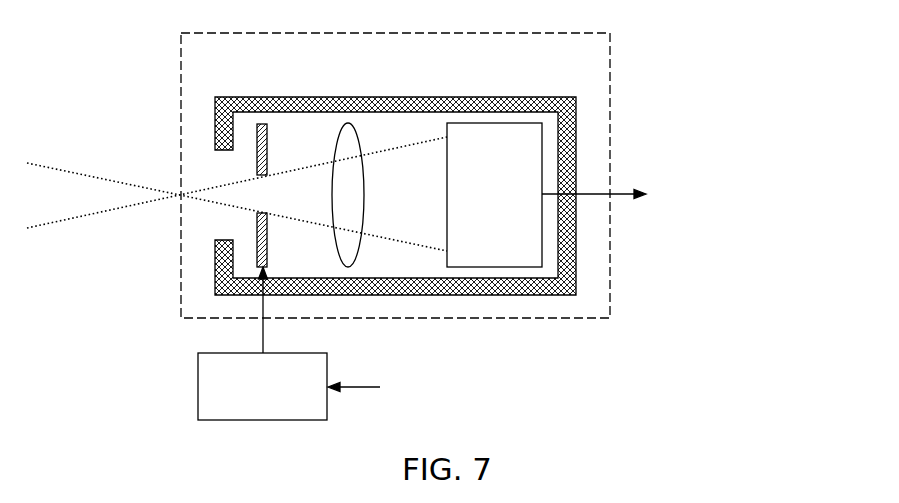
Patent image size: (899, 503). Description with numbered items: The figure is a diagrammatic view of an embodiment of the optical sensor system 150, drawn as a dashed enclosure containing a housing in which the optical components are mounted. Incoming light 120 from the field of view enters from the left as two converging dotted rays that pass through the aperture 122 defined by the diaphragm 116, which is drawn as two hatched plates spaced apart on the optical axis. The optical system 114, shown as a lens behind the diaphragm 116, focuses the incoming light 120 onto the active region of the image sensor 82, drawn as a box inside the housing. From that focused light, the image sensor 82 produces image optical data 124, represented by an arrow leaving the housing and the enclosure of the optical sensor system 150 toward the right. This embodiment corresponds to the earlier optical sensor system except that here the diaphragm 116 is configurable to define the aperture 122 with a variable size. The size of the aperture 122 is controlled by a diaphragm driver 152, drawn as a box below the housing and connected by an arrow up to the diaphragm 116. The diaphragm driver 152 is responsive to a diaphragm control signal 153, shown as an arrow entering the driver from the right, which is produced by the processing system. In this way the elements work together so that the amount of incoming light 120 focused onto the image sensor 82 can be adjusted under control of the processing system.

The optical sensor system 150 is at (611, 68).
The incoming light 120 is at (73, 220).
The diaphragm 116 is at (268, 137).
The aperture 122 is at (267, 198).
The optical system 114 is at (358, 255).
The image sensor 82 is at (446, 207).
The image optical data 124 is at (621, 193).
The diaphragm driver 152 is at (198, 389).
The diaphragm control signal 153 is at (353, 385).